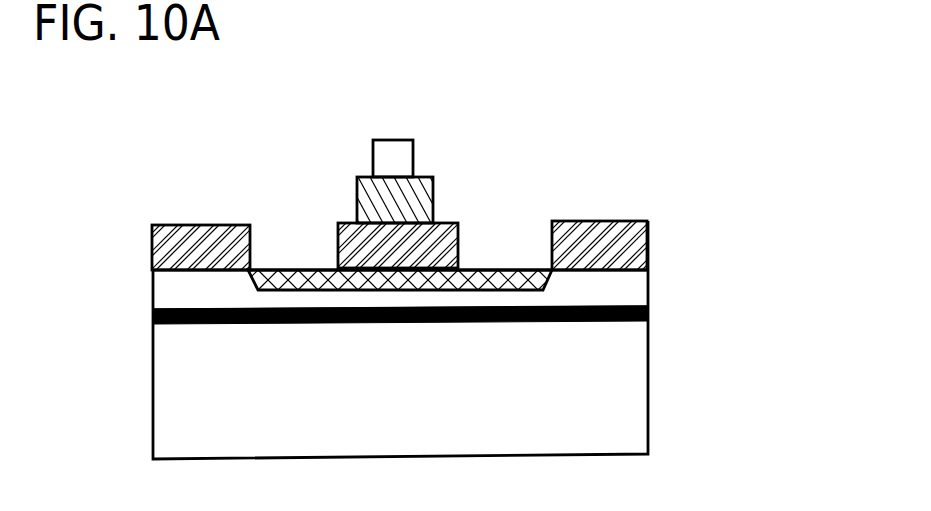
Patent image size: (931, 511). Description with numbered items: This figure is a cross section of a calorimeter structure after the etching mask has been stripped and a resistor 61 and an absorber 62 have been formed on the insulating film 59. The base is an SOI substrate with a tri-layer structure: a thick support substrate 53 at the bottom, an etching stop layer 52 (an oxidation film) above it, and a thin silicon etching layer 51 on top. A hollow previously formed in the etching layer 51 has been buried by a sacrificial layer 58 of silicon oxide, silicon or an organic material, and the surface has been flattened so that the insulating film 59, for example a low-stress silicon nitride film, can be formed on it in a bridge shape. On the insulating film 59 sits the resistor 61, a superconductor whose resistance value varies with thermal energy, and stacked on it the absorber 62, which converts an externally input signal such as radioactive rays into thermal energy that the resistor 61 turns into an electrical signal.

The etching layer 51 is at (648, 263).
The etching stop layer 52 is at (648, 300).
The support substrate 53 is at (598, 406).
The sacrificial layer 58 is at (490, 267).
The insulating film 59 is at (632, 278).
The resistor 61 is at (415, 177).
The absorber 62 is at (393, 142).